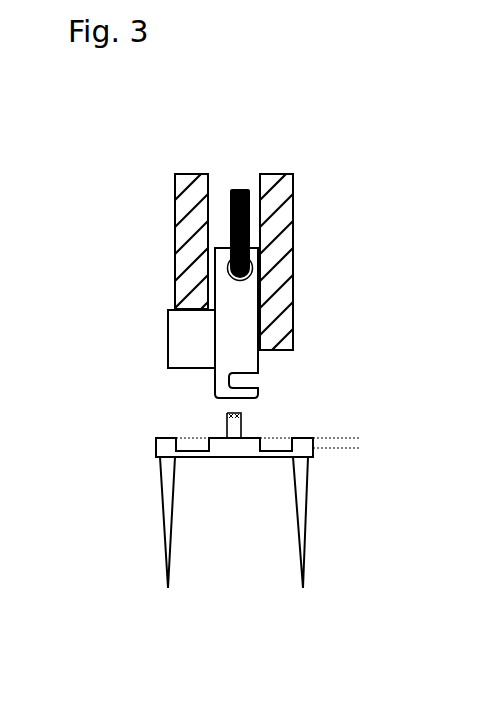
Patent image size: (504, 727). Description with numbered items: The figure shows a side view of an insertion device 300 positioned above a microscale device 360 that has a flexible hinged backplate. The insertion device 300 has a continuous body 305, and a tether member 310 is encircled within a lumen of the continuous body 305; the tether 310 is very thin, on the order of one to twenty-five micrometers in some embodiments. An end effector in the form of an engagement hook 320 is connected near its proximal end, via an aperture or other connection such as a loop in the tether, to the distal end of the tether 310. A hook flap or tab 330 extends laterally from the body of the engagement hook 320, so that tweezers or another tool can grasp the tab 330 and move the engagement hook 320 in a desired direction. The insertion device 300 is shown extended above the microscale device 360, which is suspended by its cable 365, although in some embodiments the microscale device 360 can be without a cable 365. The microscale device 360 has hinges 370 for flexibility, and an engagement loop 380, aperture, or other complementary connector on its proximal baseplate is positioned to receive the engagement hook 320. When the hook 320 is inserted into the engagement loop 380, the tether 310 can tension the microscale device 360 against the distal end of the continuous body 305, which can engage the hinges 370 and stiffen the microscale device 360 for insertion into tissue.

The insertion device 300 is at (303, 178).
The continuous body 305 is at (168, 182).
The tether member 310 is at (237, 185).
The engagement hook 320 is at (273, 397).
The hook flap or tab 330 is at (153, 348).
The microscale device 360 is at (322, 513).
The cable 365 is at (372, 447).
The hinges 370 is at (287, 451).
The engagement loop 380 is at (222, 432).